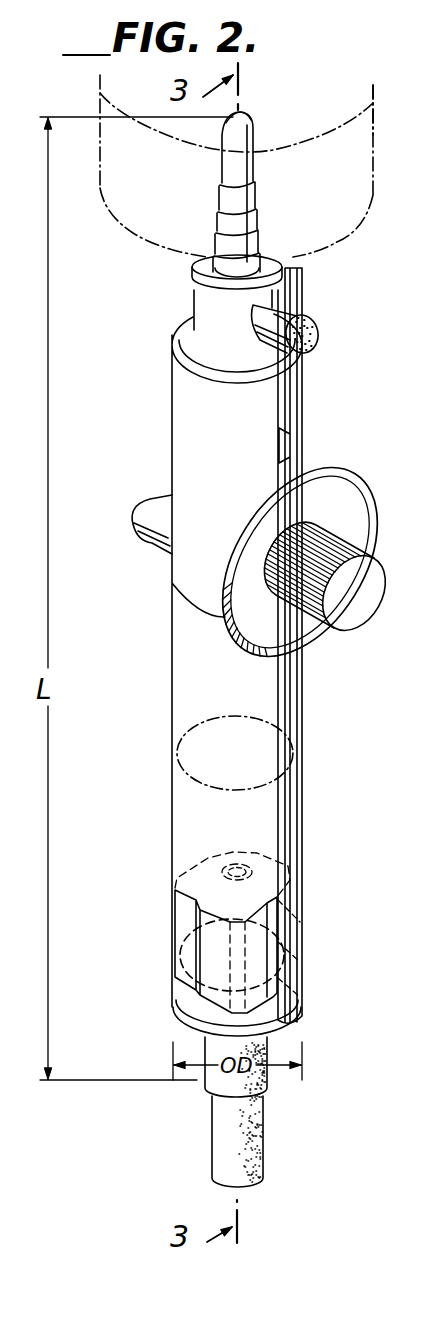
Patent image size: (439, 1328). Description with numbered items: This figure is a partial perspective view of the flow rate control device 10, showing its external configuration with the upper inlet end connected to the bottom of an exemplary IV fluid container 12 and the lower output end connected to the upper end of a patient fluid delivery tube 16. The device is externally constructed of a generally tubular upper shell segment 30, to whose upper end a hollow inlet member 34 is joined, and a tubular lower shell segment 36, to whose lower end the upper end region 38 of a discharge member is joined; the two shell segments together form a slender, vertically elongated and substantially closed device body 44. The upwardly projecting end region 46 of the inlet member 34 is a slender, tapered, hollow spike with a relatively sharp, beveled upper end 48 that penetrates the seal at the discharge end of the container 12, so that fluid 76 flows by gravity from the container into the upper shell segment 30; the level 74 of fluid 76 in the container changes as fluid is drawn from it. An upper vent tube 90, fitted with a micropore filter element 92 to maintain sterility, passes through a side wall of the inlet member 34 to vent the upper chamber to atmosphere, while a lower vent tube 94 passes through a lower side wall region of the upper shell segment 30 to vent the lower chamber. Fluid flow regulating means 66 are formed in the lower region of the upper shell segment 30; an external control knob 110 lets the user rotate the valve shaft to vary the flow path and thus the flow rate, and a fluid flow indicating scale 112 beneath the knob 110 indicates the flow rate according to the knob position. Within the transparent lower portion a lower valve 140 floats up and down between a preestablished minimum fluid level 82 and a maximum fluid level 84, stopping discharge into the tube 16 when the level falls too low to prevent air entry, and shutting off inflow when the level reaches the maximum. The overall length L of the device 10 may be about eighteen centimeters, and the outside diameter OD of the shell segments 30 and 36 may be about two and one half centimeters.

The flow rate control device 10 is at (142, 732).
The fluid container 12 is at (378, 160).
The fluid supply tube 16 is at (262, 1140).
The upper shell segment 30 is at (306, 402).
The inlet member 34 is at (193, 296).
The lower shell segment 36 is at (305, 790).
The upper end region of discharge member 38 is at (305, 1019).
The device body 44 is at (170, 622).
The upwardly-projecting end region of inlet member 46 is at (257, 200).
The beveled upper end 48 is at (253, 113).
The fluid flow regulating means 66 is at (364, 622).
The fluid level in container 74 is at (337, 127).
The fluid 76 is at (374, 130).
The predetermined minimum fluid level 82 is at (176, 967).
The preestablished maximum fluid level 84 is at (197, 730).
The upper vent tube 90 is at (312, 341).
The micropore filter element 92 is at (312, 326).
The lower vent tube 94 is at (152, 500).
The external control knob 110 is at (382, 568).
The fluid flow indicating scale 112 is at (358, 472).
The lower valve 140 is at (270, 937).